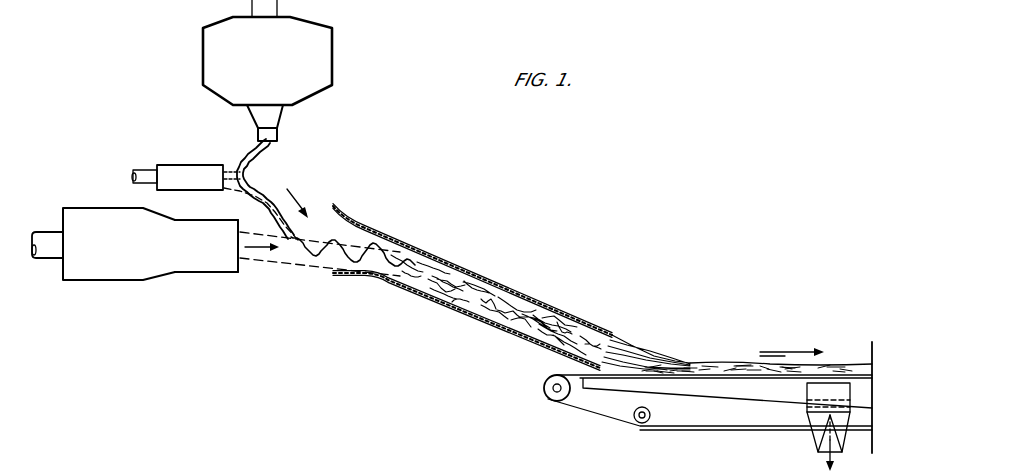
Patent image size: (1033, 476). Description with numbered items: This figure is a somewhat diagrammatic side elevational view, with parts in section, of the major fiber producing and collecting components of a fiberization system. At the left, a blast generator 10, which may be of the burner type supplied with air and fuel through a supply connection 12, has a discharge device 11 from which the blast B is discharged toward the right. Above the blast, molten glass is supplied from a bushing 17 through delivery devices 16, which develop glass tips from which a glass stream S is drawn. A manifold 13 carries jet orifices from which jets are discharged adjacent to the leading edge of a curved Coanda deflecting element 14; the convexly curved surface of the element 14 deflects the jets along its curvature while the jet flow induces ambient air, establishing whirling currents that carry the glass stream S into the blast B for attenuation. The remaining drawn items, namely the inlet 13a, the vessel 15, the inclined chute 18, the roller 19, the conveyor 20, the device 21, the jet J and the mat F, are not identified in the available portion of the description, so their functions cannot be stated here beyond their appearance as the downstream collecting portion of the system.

The blast generator 10 is at (124, 273).
The discharge device 11 is at (197, 268).
The supply connection 12 is at (49, 257).
The manifold 13 is at (168, 168).
The feed inlet 13a is at (133, 177).
The curved Coanda deflecting element 14 is at (233, 193).
The hopper 15 is at (326, 40).
The delivery devices 16 is at (274, 135).
The bushing 17 is at (278, 113).
The chute 18 is at (430, 255).
The conveyor pulley 19 is at (568, 373).
The conveyor 20 is at (713, 395).
The compacting device 21 is at (823, 442).
The glass stream S is at (243, 158).
The air jet J is at (263, 190).
The blast B is at (282, 258).
The fibrous mat F is at (715, 363).